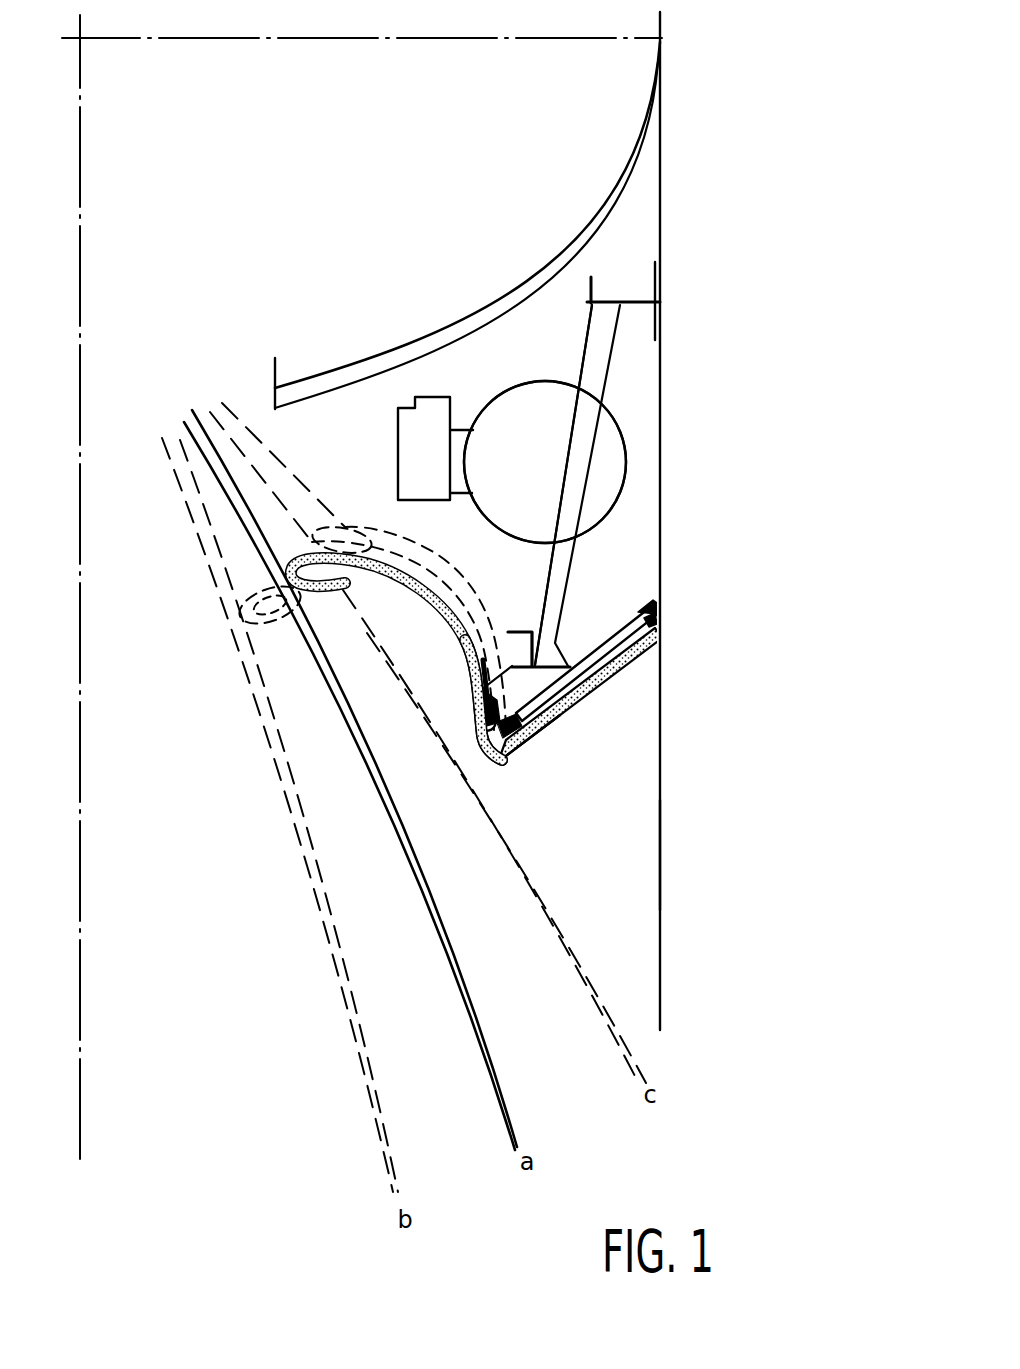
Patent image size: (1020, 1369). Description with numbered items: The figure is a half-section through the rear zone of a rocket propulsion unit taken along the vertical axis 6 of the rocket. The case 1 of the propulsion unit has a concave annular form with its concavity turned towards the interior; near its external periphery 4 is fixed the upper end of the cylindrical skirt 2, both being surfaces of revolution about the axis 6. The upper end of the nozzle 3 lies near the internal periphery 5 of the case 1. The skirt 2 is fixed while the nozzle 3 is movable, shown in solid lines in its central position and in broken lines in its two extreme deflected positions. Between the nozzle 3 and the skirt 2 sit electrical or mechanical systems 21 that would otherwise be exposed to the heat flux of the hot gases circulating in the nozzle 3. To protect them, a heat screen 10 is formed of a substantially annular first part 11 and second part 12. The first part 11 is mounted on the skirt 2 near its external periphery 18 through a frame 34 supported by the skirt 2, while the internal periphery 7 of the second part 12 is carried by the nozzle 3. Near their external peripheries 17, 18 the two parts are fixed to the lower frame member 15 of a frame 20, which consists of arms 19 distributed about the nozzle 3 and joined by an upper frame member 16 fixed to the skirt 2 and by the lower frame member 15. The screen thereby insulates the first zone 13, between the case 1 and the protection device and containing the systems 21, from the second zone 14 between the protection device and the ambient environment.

The case 1 is at (560, 250).
The skirt 2 is at (662, 762).
The nozzle 3 is at (468, 1047).
The external periphery 4 is at (662, 42).
The internal periphery 5 is at (273, 380).
The vertical axis 6 is at (80, 1135).
The internal periphery 7 is at (285, 584).
The heat screen 10 is at (490, 777).
The first part 11 is at (625, 673).
The second part 12 is at (412, 618).
The first zone 13 is at (636, 376).
The second zone 14 is at (622, 857).
The lower frame member 15 is at (620, 708).
The upper frame member 16 is at (663, 310).
The external periphery 17 is at (492, 725).
The external periphery 18 is at (503, 773).
The arms 19 is at (575, 565).
The frame 20 is at (630, 506).
The electrical or mechanical systems 21 is at (628, 440).
The frame 34 is at (658, 612).